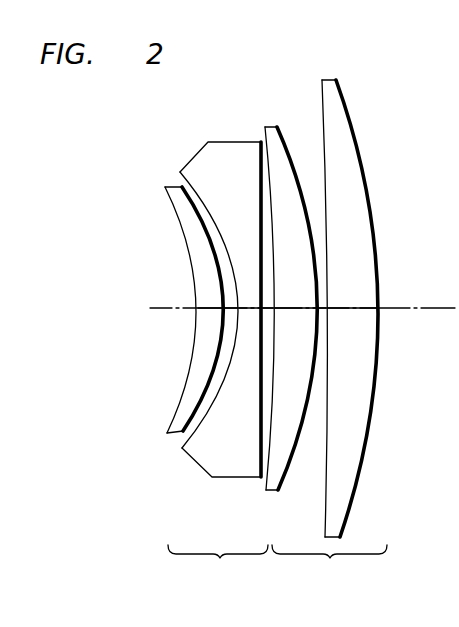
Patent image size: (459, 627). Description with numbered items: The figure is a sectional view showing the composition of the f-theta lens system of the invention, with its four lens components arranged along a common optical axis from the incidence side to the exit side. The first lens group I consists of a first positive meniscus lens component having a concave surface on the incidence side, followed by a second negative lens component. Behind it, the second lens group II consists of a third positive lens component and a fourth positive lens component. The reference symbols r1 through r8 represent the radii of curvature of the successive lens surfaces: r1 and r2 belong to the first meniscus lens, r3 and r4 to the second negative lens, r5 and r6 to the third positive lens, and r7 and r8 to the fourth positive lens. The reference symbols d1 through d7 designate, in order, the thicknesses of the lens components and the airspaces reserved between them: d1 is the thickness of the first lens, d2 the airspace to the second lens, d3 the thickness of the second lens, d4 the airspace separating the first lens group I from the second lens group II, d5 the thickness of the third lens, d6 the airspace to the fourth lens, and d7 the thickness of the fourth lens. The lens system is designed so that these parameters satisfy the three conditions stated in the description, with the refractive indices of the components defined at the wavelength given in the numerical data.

The radius of curvature of first surface r1 is at (172, 205).
The radius of curvature of second surface r2 is at (182, 189).
The radius of curvature of third surface r3 is at (197, 180).
The radius of curvature of fourth surface r4 is at (258, 161).
The radius of curvature of fifth surface r5 is at (267, 126).
The radius of curvature of sixth surface r6 is at (283, 131).
The radius of curvature of seventh surface r7 is at (322, 92).
The radius of curvature of eighth surface r8 is at (343, 91).
The thickness of first lens component d1 is at (211, 313).
The airspace between first and second lens components d2 is at (234, 305).
The thickness of second lens component d3 is at (252, 311).
The airspace between second and third lens components d4 is at (268, 307).
The thickness of third lens component d5 is at (302, 306).
The airspace between third and fourth lens components d6 is at (322, 306).
The thickness of fourth lens component d7 is at (355, 306).
The first lens group I is at (218, 566).
The second lens group II is at (329, 566).